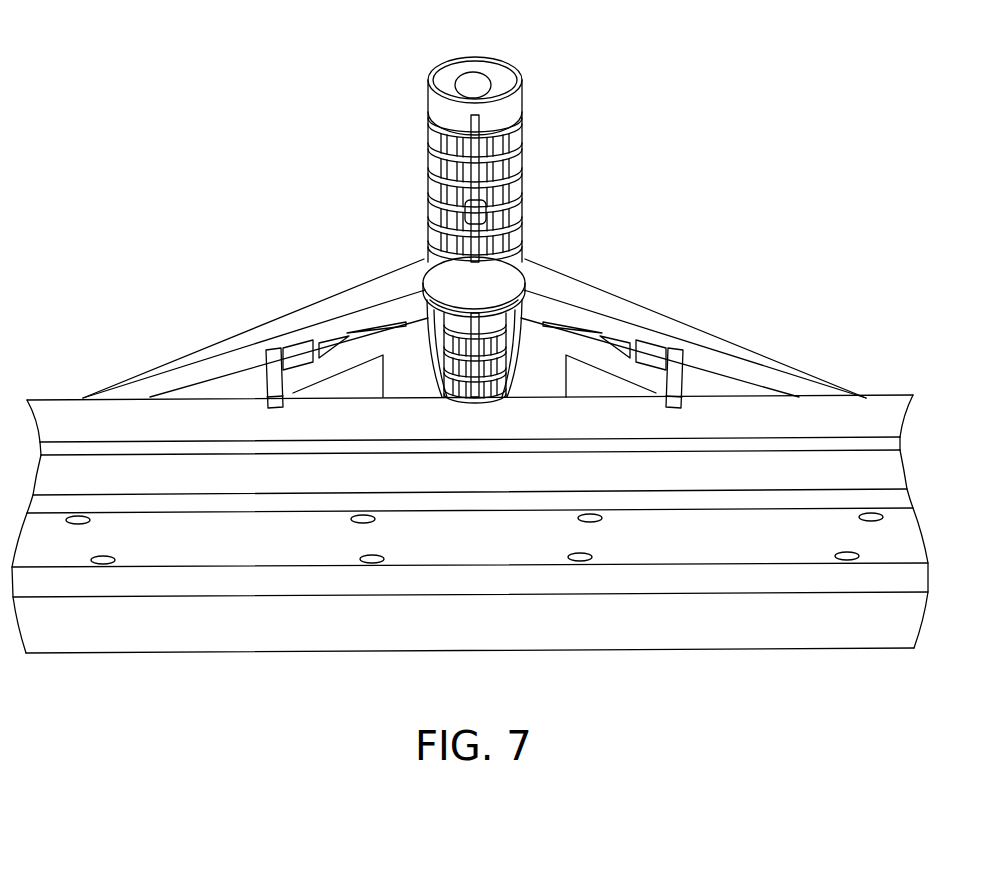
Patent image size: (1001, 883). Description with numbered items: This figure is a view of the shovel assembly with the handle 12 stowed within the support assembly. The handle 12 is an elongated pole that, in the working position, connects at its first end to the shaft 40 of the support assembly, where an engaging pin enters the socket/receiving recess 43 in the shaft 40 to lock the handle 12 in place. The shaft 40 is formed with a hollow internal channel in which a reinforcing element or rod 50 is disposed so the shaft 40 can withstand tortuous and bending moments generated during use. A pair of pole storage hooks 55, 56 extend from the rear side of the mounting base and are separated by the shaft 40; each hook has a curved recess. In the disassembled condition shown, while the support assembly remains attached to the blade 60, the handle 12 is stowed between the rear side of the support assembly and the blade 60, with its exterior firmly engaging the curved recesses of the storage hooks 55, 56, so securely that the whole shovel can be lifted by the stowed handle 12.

The handle 12 is at (777, 412).
The shaft 40 is at (517, 155).
The socket/receiving recess 43 is at (480, 215).
The reinforcing element or rod 50 is at (480, 82).
The pole storage hook 55 is at (272, 350).
The pole storage hook 56 is at (673, 365).
The blade 60 is at (710, 623).